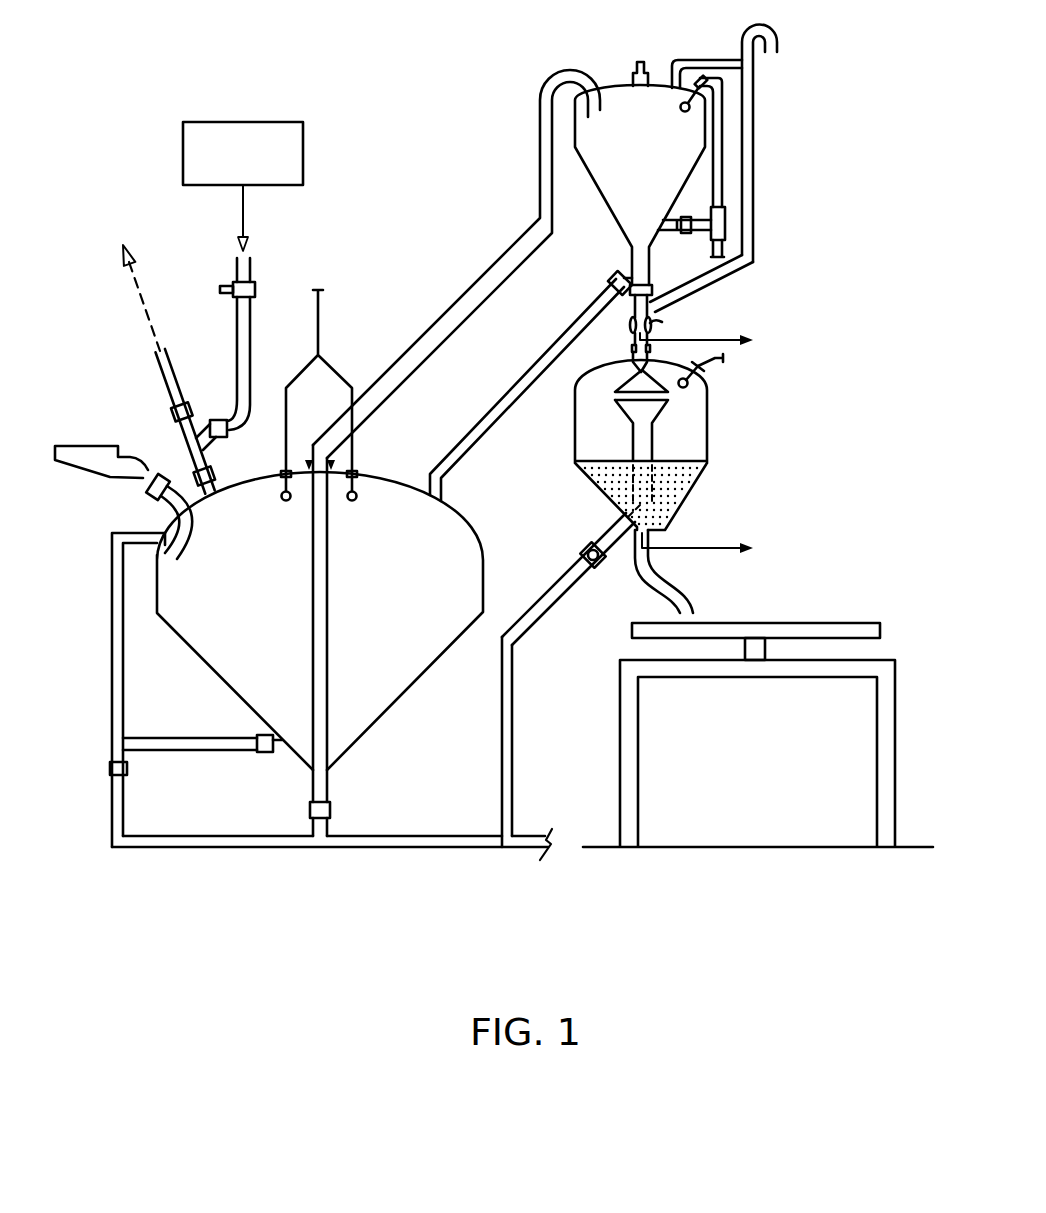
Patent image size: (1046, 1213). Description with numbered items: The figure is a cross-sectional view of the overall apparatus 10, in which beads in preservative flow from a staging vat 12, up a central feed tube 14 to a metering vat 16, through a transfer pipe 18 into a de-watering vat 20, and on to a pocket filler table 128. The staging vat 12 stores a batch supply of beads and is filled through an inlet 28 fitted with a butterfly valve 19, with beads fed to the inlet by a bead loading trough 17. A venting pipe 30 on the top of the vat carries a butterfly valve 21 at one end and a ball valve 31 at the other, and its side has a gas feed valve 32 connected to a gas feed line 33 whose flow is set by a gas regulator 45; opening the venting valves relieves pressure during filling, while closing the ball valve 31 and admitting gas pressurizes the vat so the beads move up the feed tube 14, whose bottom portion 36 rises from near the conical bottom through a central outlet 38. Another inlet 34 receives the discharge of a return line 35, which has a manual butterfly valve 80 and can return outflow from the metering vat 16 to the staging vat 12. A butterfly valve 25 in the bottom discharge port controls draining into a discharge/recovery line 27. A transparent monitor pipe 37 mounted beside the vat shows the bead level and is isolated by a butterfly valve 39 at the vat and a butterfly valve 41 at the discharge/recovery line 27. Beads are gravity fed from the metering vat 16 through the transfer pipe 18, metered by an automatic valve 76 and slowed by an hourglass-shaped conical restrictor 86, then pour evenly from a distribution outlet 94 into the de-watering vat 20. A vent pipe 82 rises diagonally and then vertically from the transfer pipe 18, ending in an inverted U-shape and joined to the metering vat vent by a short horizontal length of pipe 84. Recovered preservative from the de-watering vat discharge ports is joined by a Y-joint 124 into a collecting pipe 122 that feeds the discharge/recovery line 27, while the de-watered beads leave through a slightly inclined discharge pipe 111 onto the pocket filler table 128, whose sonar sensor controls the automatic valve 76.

The apparatus 10 is at (329, 104).
The staging vat 12 is at (456, 498).
The central feed tube 14 is at (474, 274).
The metering vat 16 is at (610, 72).
The bead loading trough 17 is at (92, 445).
The transfer pipe 18 is at (700, 300).
The butterfly valve 19 is at (145, 488).
The de-watering vat 20 is at (722, 400).
The butterfly valve 21 is at (225, 468).
The butterfly valve 25 is at (331, 810).
The discharge/recovery line 27 is at (532, 834).
The inlet 28 is at (158, 516).
The venting pipe 30 is at (192, 459).
The ball valve 31 is at (174, 412).
The gas feed valve 32 is at (224, 418).
The gas feed line 33 is at (237, 320).
The inlet 34 is at (418, 484).
The return line 35 is at (512, 374).
The bottom portion 36 is at (328, 596).
The transparent monitor pipe 37 is at (124, 650).
The outlet 38 is at (340, 461).
The butterfly valve 39 is at (263, 753).
The butterfly valve 41 is at (127, 770).
The gas regulator 45 is at (233, 282).
The automatic valve 76 is at (651, 283).
The manual butterfly valve 80 is at (610, 277).
The vent pipe 82 is at (756, 140).
The short horizontal length of pipe 84 is at (715, 60).
The conical restrictor 86 is at (652, 325).
The distribution outlet 94 is at (632, 348).
The discharge pipe 111 is at (688, 577).
The collecting pipe 122 is at (500, 726).
The Y-joint 124 is at (582, 548).
The pocket filler table 128 is at (849, 612).